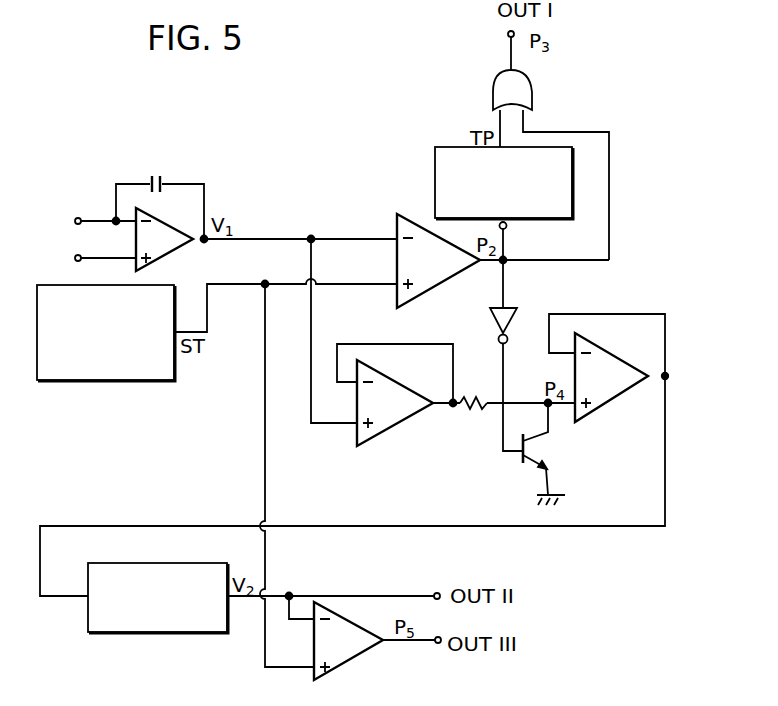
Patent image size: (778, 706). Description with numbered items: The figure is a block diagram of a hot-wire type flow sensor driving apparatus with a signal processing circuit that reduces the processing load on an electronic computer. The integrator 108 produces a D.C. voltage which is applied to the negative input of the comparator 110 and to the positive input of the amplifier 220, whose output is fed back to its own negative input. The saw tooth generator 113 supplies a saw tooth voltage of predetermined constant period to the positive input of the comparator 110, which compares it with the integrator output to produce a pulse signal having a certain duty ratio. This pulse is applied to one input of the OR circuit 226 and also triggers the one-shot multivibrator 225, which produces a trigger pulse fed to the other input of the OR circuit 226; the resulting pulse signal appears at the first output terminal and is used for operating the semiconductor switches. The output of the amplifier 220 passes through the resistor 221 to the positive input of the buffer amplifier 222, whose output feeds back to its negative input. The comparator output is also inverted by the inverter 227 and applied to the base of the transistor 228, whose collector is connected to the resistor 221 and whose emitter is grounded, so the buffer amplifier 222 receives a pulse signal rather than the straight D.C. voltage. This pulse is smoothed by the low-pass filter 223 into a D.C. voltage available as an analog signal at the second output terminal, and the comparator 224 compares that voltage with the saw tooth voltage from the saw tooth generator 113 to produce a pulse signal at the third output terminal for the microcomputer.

The integrator 108 is at (145, 209).
The comparator 110 is at (397, 300).
The saw tooth generator 113 is at (143, 381).
The amplifier 220 is at (402, 424).
The resistor 221 is at (485, 406).
The buffer amplifier 222 is at (611, 401).
The low-pass filter 223 is at (168, 633).
The comparator 224 is at (362, 657).
The one-shot multivibrator 225 is at (435, 170).
The OR circuit 226 is at (493, 99).
The inverter 227 is at (516, 317).
The transistor 228 is at (535, 464).